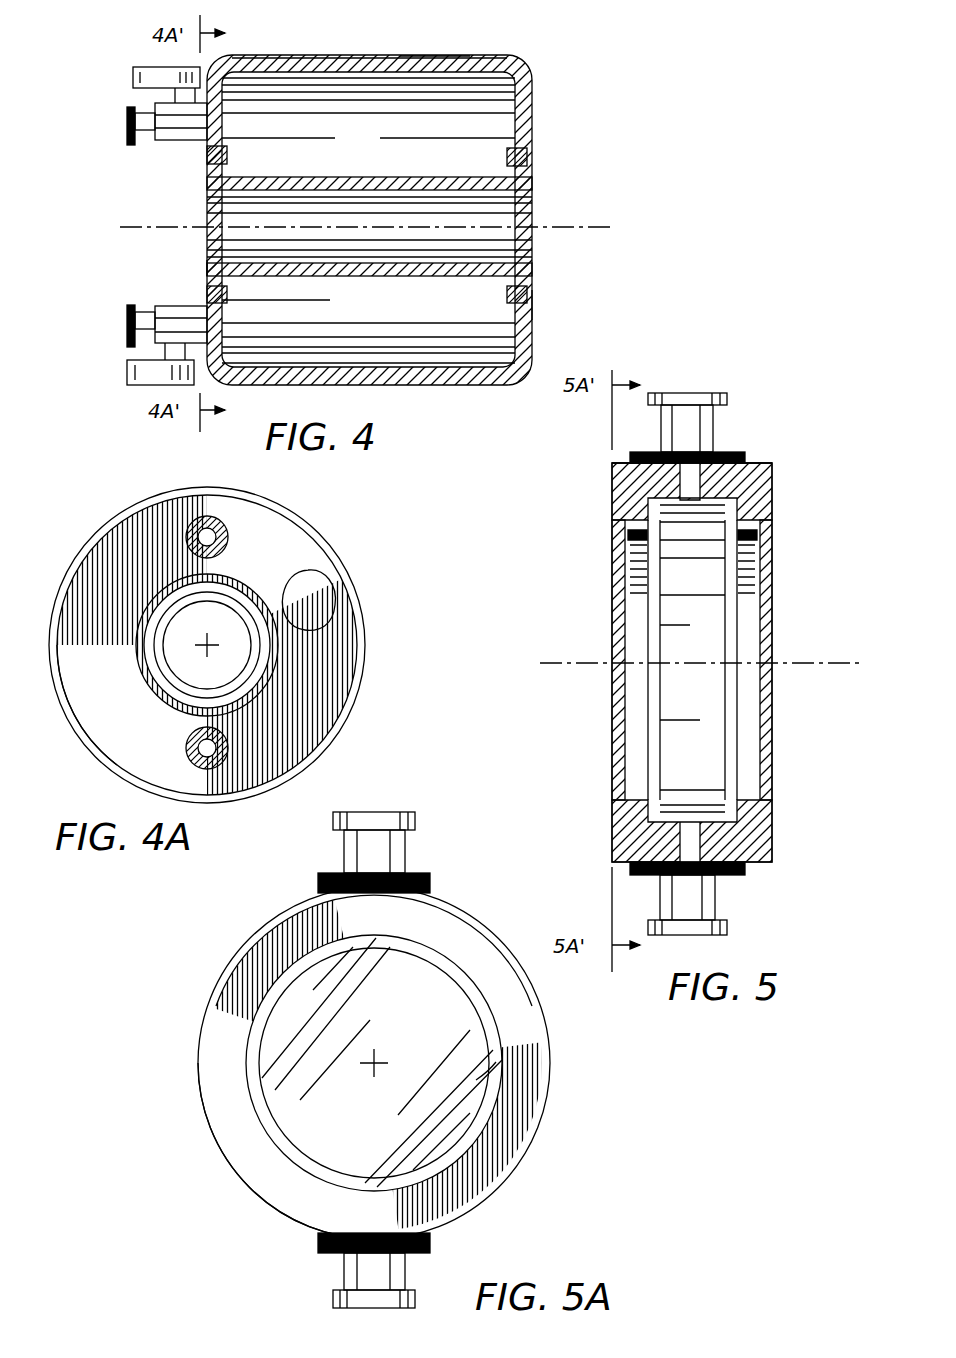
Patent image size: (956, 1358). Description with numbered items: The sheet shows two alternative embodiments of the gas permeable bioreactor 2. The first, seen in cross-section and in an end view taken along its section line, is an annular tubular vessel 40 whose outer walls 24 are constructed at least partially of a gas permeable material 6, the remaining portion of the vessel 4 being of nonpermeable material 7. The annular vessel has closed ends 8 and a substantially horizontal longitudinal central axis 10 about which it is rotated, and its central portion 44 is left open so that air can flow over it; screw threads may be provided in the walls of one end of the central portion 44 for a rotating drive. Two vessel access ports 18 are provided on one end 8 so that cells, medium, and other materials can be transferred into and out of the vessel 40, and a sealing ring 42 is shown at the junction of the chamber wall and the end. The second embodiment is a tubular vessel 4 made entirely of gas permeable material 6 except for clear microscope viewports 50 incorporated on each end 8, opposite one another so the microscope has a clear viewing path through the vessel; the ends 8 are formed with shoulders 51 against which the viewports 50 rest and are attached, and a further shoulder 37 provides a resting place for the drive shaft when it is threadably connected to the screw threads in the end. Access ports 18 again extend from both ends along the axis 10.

In FIG. 4, the bioreactor 2 is at (548, 60).
In FIG. 4A, the bioreactor 2 is at (103, 505).
In FIG. 5, the bioreactor 2 is at (790, 400).
In FIG. 5A, the bioreactor 2 is at (200, 985).
In FIG. 5, the tubular vessel 4 is at (692, 658).
In FIG. 5A, the tubular vessel 4 is at (382, 1062).
In FIG. 4, the gas permeable material 6 is at (400, 57).
In FIG. 5, the gas permeable material 6 is at (612, 478).
In FIG. 5A, the gas permeable material 6 is at (500, 1170).
In FIG. 5A, the nonpermeable material 7 is at (495, 1068).
In FIG. 4, the closed end 8 is at (207, 272).
In FIG. 4A, the closed end 8 is at (290, 530).
In FIG. 5, the closed end 8 is at (612, 710).
In FIG. 5A, the closed end 8 is at (205, 1130).
In FIG. 4, the longitudinal central axis 10 is at (138, 225).
In FIG. 4A, the longitudinal central axis 10 is at (210, 640).
In FIG. 5, the longitudinal central axis 10 is at (832, 663).
In FIG. 5A, the longitudinal central axis 10 is at (385, 1060).
In FIG. 4, the vessel access port 18 is at (127, 122).
In FIG. 4A, the vessel access port 18 is at (186, 530).
In FIG. 5, the vessel access port 18 is at (710, 393).
In FIG. 5A, the vessel access port 18 is at (410, 818).
In FIG. 4, the outer walls 24 is at (290, 58).
In FIG. 4A, the outer walls 24 is at (112, 745).
In FIG. 5, the outer walls 24 is at (772, 820).
In FIG. 5A, the shoulder 37 is at (315, 1168).
In FIG. 4, the annular tubular vessel 40 is at (368, 220).
In FIG. 4A, the annular tubular vessel 40 is at (308, 600).
In FIG. 4, the seal ring 42 is at (518, 140).
In FIG. 4A, the seal ring 42 is at (250, 728).
In FIG. 4, the central portion 44 is at (515, 210).
In FIG. 4A, the central portion 44 is at (207, 645).
In FIG. 5, the microscope viewport 50 is at (612, 760).
In FIG. 5A, the microscope viewport 50 is at (445, 990).
In FIG. 5, the shoulder 51 is at (772, 495).